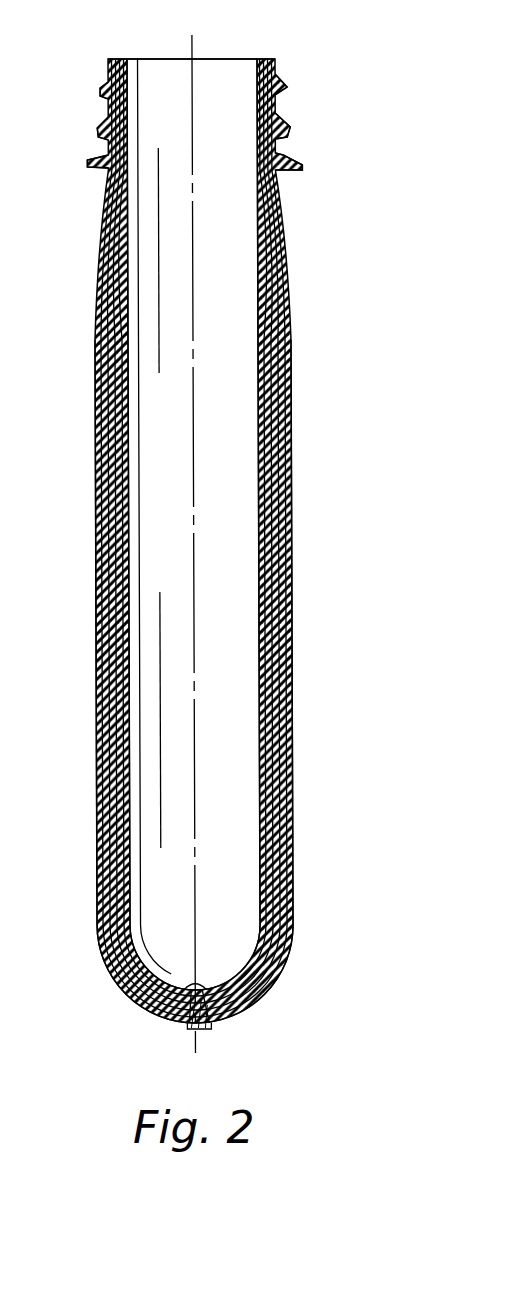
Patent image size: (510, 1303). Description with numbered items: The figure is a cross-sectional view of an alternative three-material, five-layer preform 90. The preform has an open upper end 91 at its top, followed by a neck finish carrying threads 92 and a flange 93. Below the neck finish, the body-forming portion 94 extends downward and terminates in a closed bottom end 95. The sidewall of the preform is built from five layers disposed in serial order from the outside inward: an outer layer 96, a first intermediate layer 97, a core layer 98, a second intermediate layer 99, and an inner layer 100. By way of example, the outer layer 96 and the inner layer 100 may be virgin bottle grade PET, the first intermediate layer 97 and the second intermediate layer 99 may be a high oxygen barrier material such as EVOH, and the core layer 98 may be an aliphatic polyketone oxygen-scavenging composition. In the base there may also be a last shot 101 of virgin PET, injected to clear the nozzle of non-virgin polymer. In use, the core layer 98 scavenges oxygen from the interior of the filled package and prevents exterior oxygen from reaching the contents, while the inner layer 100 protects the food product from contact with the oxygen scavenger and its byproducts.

The five-layer preform 90 is at (304, 261).
The open upper end 91 is at (226, 58).
The threads 92 is at (287, 88).
The flange 93 is at (301, 168).
The body-forming portion 94 is at (294, 414).
The closed bottom end 95 is at (250, 997).
The outer layer 96 is at (98, 347).
The first intermediate layer 97 is at (100, 377).
The core layer 98 is at (105, 408).
The second intermediate layer 99 is at (100, 448).
The inner layer 100 is at (102, 497).
The last shot 101 is at (212, 1021).